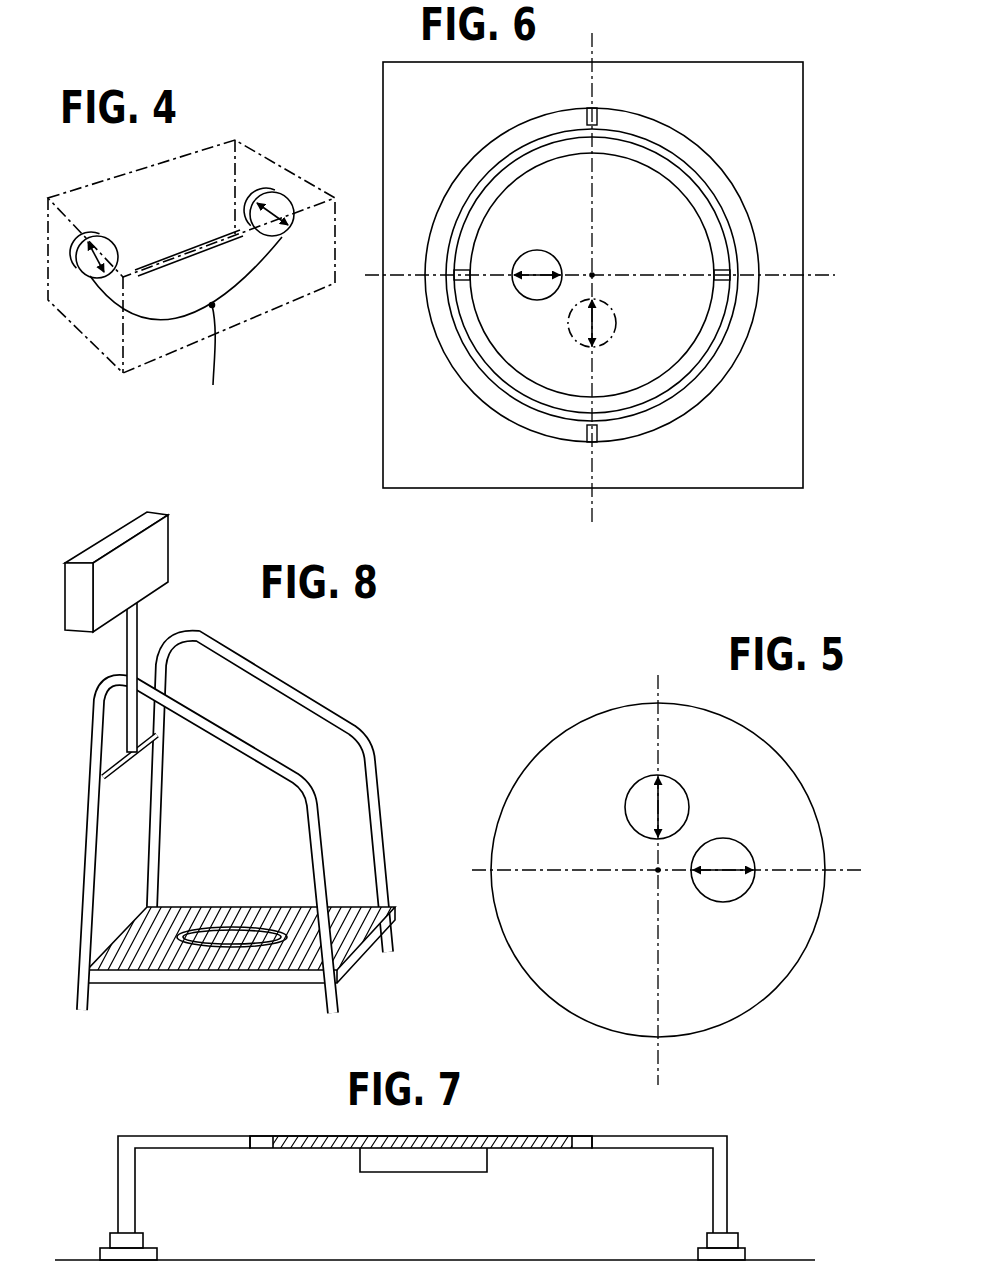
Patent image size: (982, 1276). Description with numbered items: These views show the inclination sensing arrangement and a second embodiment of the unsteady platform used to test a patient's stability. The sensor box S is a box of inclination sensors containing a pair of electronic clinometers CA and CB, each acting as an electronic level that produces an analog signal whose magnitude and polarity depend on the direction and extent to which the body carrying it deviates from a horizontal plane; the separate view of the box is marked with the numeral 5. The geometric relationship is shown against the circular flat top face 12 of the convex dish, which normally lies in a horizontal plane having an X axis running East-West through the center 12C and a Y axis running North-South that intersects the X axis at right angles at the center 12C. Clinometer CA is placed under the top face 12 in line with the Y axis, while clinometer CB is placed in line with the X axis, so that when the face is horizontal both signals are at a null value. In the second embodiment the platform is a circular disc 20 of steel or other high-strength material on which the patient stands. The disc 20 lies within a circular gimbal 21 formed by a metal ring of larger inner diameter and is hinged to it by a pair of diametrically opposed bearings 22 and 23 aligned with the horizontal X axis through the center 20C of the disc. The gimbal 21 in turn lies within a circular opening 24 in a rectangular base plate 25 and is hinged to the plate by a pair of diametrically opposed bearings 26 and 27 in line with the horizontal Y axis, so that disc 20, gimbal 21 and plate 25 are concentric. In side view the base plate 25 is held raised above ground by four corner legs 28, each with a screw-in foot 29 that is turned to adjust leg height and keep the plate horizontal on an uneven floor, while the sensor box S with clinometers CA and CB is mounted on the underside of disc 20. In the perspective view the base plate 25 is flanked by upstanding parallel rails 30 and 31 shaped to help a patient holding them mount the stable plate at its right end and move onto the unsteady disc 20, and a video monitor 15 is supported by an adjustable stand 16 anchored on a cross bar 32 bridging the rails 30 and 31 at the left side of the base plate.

In FIG. 4, the sensor block 5 is at (273, 162).
In FIG. 4, the clinometer CA is at (113, 253).
In FIG. 6, the clinometer CA is at (617, 324).
In FIG. 5, the clinometer CA is at (687, 803).
In FIG. 4, the clinometer CB is at (248, 210).
In FIG. 6, the clinometer CB is at (553, 256).
In FIG. 5, the clinometer CB is at (747, 852).
In FIG. 5, the flat top face 12 is at (782, 778).
In FIG. 5, the center 12C is at (658, 873).
In FIG. 8, the video monitor 15 is at (165, 543).
In FIG. 8, the adjustable stand 16 is at (125, 647).
In FIG. 6, the circular disc 20 is at (687, 218).
In FIG. 8, the circular disc 20 is at (243, 935).
In FIG. 7, the circular disc 20 is at (497, 1142).
In FIG. 6, the center 20C is at (593, 272).
In FIG. 6, the gimbal 21 is at (677, 157).
In FIG. 6, the bearing 22 is at (465, 272).
In FIG. 6, the bearing 23 is at (718, 280).
In FIG. 6, the circular opening 24 is at (630, 118).
In FIG. 6, the base plate 25 is at (737, 73).
In FIG. 8, the base plate 25 is at (207, 905).
In FIG. 7, the base plate 25 is at (678, 1142).
In FIG. 6, the bearing 26 is at (595, 438).
In FIG. 6, the bearing 27 is at (590, 108).
In FIG. 7, the corner leg 28 is at (130, 1193).
In FIG. 7, the screw-in foot 29 is at (745, 1253).
In FIG. 8, the rail 30 is at (290, 683).
In FIG. 8, the rail 31 is at (228, 727).
In FIG. 8, the cross bar 32 is at (122, 763).
In FIG. 7, the sensor box S is at (445, 1163).
In FIG. 6, the X axis X is at (815, 272).
In FIG. 5, the X axis X is at (532, 870).
In FIG. 6, the Y axis Y is at (594, 45).
In FIG. 5, the Y axis Y is at (660, 983).